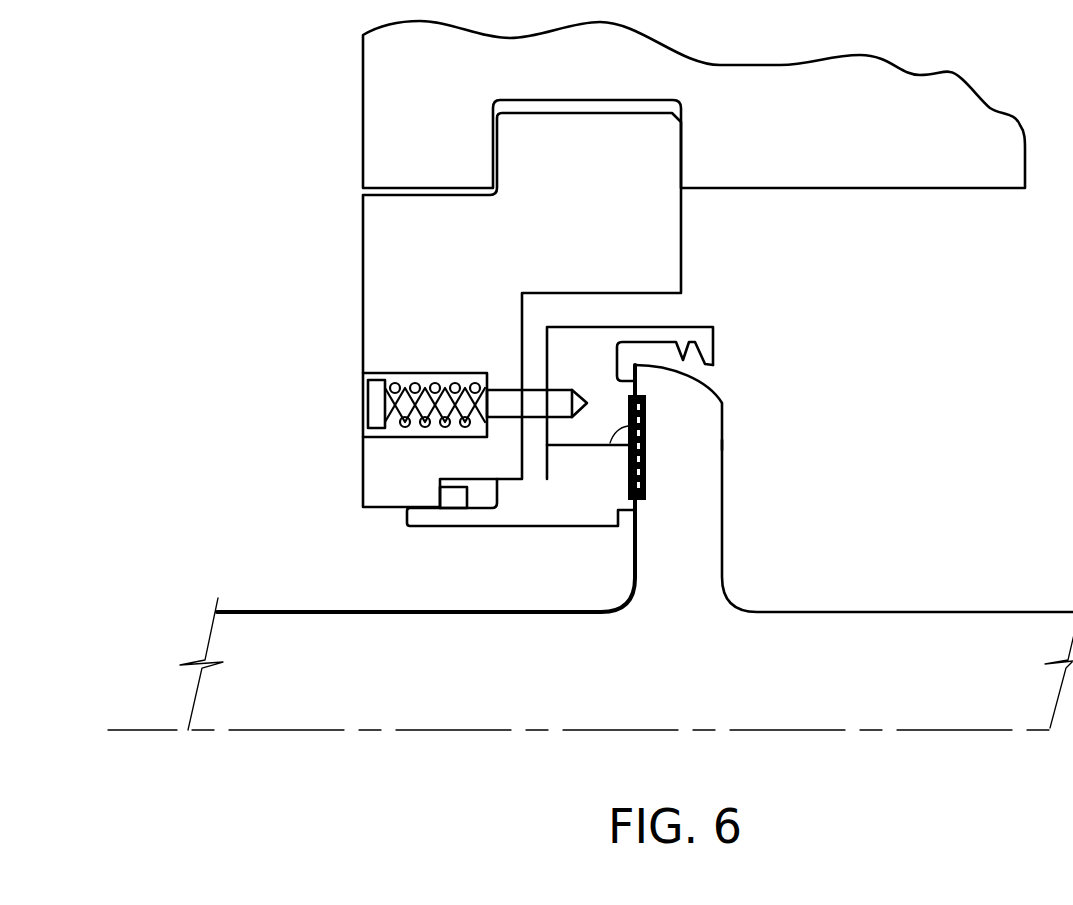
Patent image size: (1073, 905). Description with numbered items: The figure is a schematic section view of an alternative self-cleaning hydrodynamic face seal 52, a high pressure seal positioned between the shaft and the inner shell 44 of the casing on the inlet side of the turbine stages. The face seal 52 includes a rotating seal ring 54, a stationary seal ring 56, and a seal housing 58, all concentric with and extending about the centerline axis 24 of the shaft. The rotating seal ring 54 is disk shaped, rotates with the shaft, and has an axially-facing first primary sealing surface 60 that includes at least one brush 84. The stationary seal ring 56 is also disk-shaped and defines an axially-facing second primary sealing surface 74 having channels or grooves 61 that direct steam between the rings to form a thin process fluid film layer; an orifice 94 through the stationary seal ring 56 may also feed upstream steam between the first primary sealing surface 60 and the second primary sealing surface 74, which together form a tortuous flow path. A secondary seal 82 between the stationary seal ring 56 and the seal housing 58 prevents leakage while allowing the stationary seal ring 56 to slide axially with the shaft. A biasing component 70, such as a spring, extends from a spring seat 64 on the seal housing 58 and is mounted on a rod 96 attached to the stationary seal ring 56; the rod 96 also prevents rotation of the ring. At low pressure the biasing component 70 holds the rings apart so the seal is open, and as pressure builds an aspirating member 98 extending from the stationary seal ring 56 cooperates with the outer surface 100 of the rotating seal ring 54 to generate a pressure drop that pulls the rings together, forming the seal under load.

The centerline axis 24 is at (440, 730).
The inner shell 44 is at (816, 138).
The face seal 52 is at (273, 205).
The rotating seal ring 54 is at (666, 503).
The stationary seal ring 56 is at (566, 498).
The seal housing 58 is at (423, 285).
The first primary sealing surface 60 is at (631, 557).
The channels or grooves 61 is at (628, 482).
The spring seat 64 is at (458, 376).
The biasing component 70 is at (395, 438).
The second primary sealing surface 74 is at (634, 512).
The secondary seal 82 is at (455, 490).
The brush 84 is at (646, 452).
The orifice 94 is at (646, 430).
The rod 96 is at (538, 396).
The aspirating member 98 is at (718, 349).
The outer surface 100 is at (723, 400).